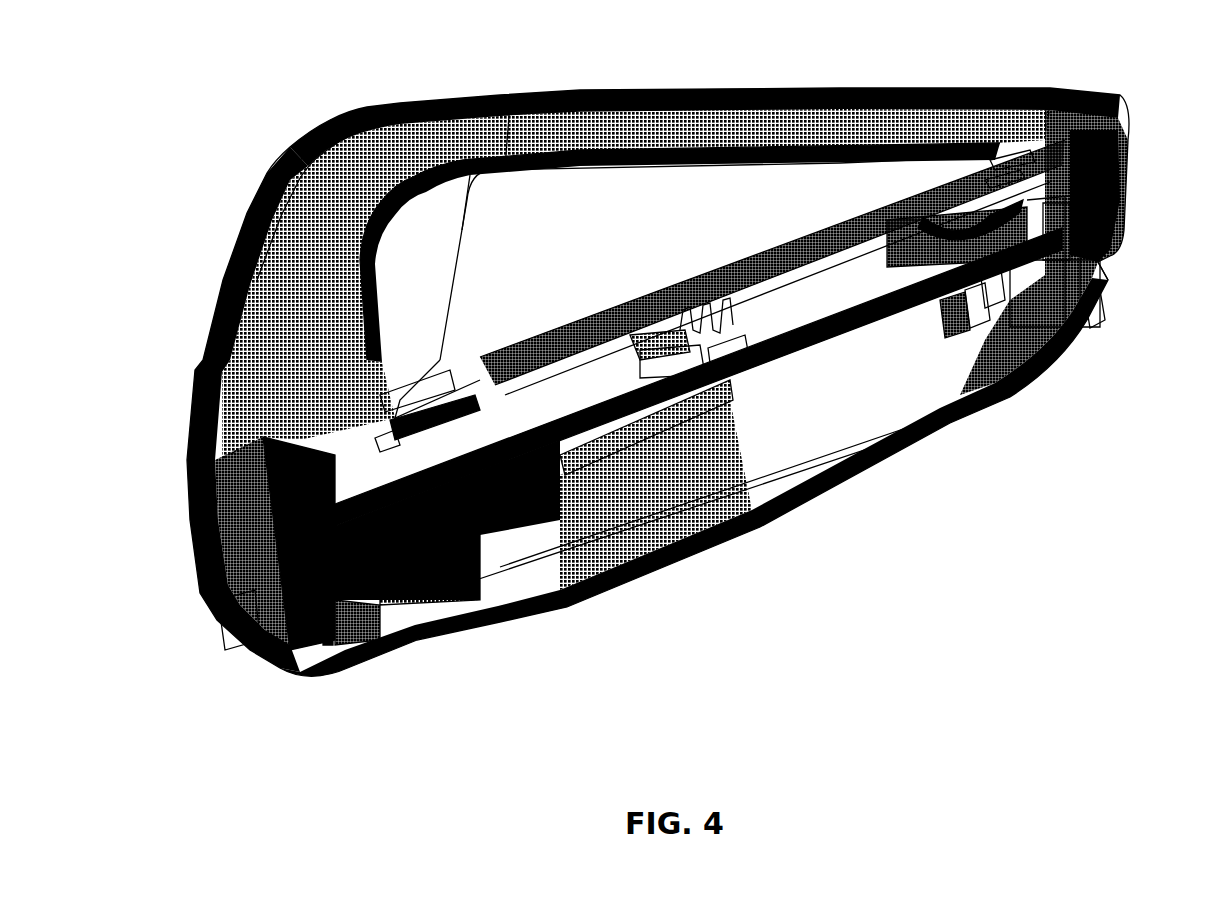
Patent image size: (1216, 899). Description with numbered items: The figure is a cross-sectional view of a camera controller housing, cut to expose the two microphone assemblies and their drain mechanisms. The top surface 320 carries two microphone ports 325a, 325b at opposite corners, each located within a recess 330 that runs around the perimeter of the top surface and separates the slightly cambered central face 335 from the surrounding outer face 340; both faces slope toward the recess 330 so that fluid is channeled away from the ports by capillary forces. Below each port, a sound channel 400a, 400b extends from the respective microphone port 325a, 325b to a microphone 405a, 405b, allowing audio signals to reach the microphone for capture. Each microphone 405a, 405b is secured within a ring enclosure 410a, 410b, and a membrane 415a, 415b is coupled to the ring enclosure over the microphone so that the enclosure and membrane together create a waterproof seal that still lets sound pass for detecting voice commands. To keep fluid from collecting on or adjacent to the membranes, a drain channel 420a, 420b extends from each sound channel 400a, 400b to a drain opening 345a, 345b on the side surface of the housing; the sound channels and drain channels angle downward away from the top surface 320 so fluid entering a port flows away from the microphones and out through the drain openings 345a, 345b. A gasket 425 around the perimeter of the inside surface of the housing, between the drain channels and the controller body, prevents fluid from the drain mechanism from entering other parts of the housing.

The top surface 320 is at (575, 190).
The microphone port 325a is at (1005, 160).
The microphone port 325b is at (385, 395).
The recess 330 is at (372, 268).
The central face 335 is at (692, 220).
The outer face 340 is at (378, 148).
The drain opening 345a is at (1112, 262).
The drain opening 345b is at (245, 625).
The sound channel 400a is at (985, 180).
The sound channel 400b is at (388, 440).
The microphone 405a is at (1040, 270).
The microphone 405b is at (420, 480).
The ring enclosure 410a is at (995, 300).
The ring enclosure 410b is at (450, 450).
The membrane 415a is at (916, 200).
The membrane 415b is at (565, 455).
The drain channel 420a is at (1090, 215).
The drain channel 420b is at (300, 590).
The gasket 425 is at (298, 640).